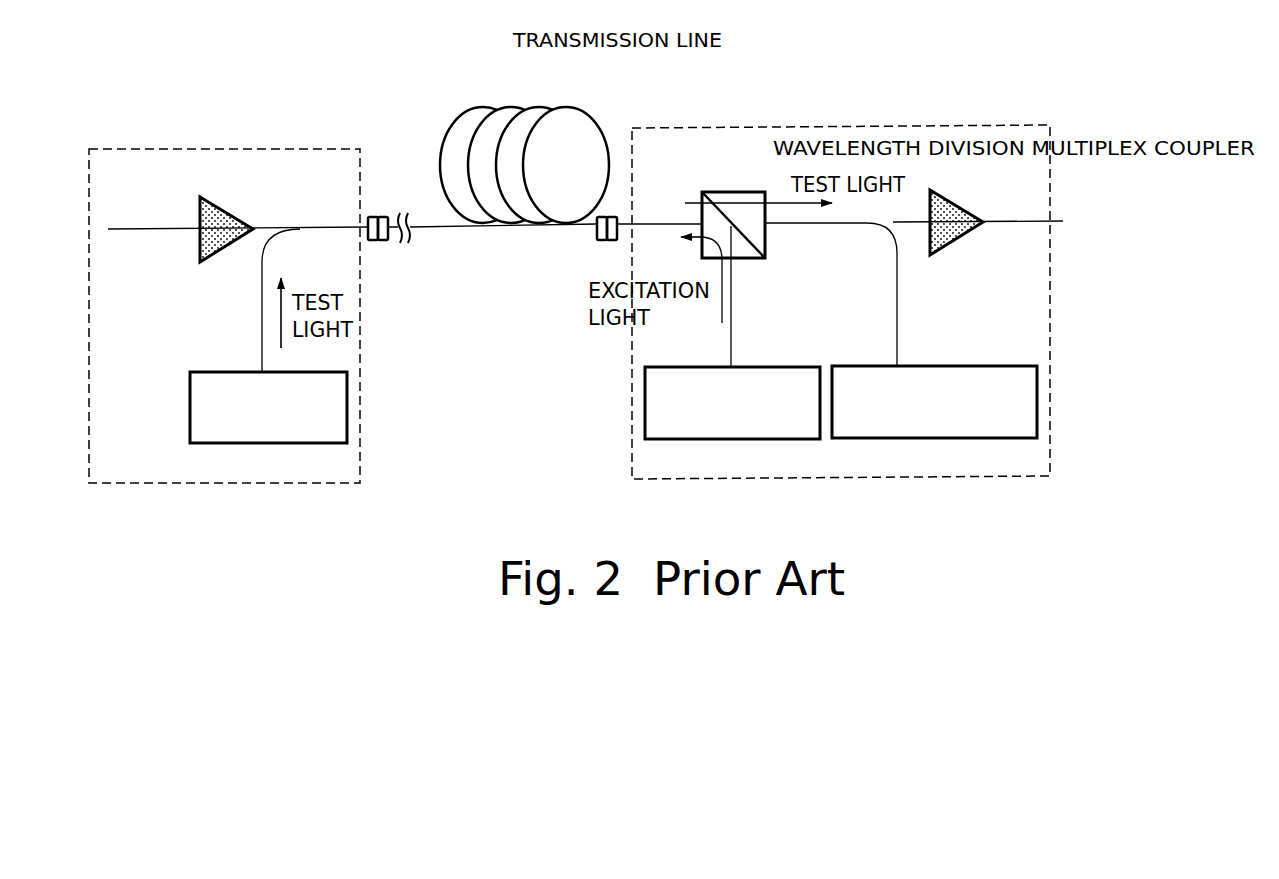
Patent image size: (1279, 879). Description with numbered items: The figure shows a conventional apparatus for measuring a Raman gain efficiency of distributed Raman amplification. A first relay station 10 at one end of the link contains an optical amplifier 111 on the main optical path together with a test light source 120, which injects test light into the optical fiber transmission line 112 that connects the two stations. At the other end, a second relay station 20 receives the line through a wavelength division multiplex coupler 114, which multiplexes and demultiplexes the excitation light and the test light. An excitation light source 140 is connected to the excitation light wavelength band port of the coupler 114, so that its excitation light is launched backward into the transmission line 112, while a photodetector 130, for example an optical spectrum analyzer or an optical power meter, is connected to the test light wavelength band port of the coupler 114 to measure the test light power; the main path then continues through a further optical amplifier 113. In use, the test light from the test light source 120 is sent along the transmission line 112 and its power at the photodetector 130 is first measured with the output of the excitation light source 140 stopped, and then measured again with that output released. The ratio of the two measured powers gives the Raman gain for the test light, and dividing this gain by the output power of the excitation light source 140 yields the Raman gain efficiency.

The relay station 10 is at (130, 162).
The relay station 20 is at (900, 128).
The optical amplifier 111 is at (197, 246).
The optical fiber transmission line 112 is at (560, 107).
The optical amplifier 113 is at (960, 233).
The wavelength division multiplex (WDM) coupler 114 is at (704, 193).
The test light source 120 is at (206, 372).
The photodetector 130 is at (957, 365).
The excitation light source 140 is at (785, 367).